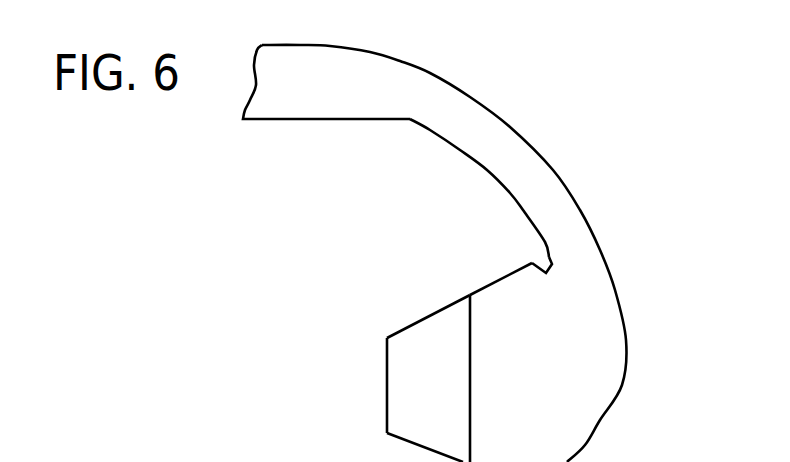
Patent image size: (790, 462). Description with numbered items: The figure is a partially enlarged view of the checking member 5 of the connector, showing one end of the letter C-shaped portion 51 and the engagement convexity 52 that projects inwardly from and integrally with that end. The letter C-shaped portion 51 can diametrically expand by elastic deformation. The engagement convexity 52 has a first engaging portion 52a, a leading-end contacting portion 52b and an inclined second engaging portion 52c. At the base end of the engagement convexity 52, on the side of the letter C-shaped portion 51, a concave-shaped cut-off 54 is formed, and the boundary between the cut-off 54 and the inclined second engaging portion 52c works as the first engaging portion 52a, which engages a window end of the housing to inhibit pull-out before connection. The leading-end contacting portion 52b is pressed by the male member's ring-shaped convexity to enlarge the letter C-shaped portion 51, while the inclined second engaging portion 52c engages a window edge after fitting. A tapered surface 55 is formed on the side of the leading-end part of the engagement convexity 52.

The checking member 5 is at (503, 107).
The letter C-shaped portion 51 is at (500, 147).
The engagement convexity 52 is at (540, 430).
The first engaging portion 52a is at (532, 262).
The leading-end contacting portion 52b is at (387, 370).
The inclined second engaging portion 52c is at (458, 298).
The concave-shaped cut-off 54 is at (547, 252).
The tapered surface 55 is at (433, 420).